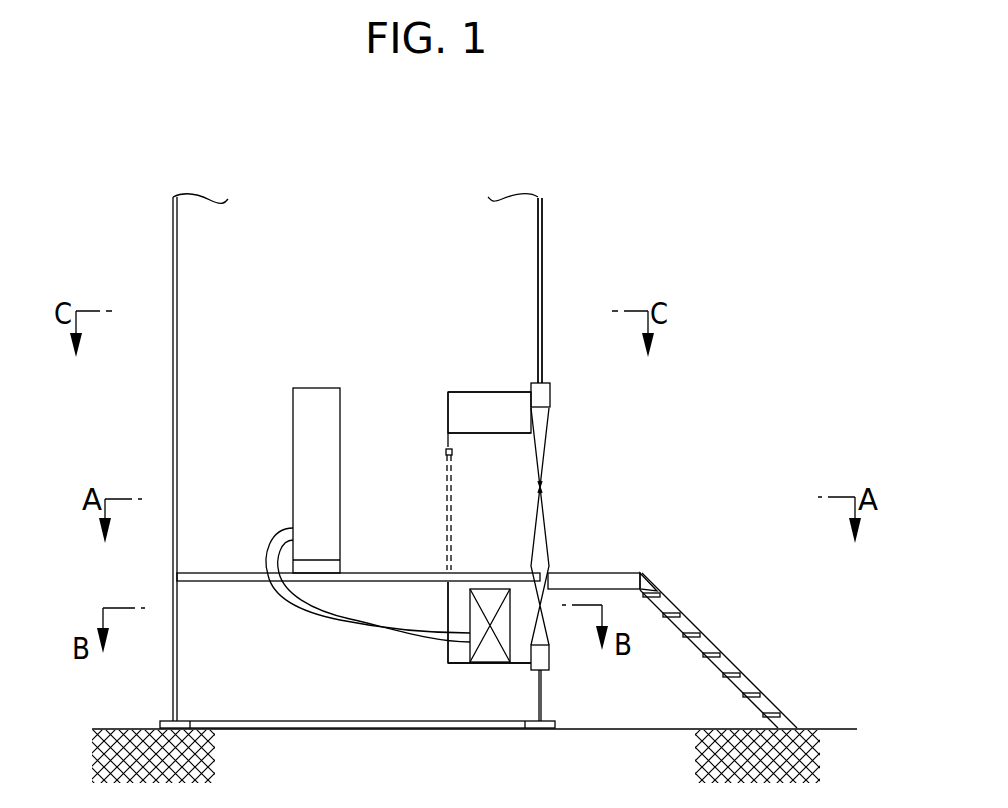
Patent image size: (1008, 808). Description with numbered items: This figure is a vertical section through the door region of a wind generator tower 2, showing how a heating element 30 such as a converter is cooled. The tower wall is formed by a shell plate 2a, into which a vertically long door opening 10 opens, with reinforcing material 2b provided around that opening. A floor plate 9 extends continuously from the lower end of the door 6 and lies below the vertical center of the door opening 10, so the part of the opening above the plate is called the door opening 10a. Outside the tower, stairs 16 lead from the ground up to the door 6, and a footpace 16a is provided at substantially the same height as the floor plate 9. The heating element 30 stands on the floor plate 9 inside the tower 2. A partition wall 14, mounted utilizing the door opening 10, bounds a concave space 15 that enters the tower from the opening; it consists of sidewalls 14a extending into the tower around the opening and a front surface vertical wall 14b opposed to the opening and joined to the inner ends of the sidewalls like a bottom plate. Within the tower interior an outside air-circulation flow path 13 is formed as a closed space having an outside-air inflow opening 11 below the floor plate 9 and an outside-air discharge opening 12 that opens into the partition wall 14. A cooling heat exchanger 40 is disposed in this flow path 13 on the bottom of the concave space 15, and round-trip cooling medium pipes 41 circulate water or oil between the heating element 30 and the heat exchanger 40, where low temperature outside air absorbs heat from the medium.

The tower 2 is at (550, 201).
The shell plate 2a is at (542, 243).
The reinforcing material 2b is at (552, 393).
The door 6 is at (446, 470).
The floor plate 9 is at (226, 572).
The door opening 10 is at (554, 441).
The door opening (upper portion) 10a is at (546, 487).
The outside-air inflow opening 11 is at (548, 630).
The outside-air discharge opening 12 is at (490, 405).
The outside air-circulation flow path 13 is at (448, 397).
The partition wall 14 is at (452, 680).
The sidewalls 14a is at (458, 392).
The front surface vertical wall 14b is at (448, 437).
The concave space 15 is at (503, 516).
The stairs 16 is at (660, 594).
The footpace 16a is at (628, 572).
The heating element 30 is at (316, 388).
The cooling heat exchanger 40 is at (470, 650).
The cooling medium pipes 41 is at (312, 630).